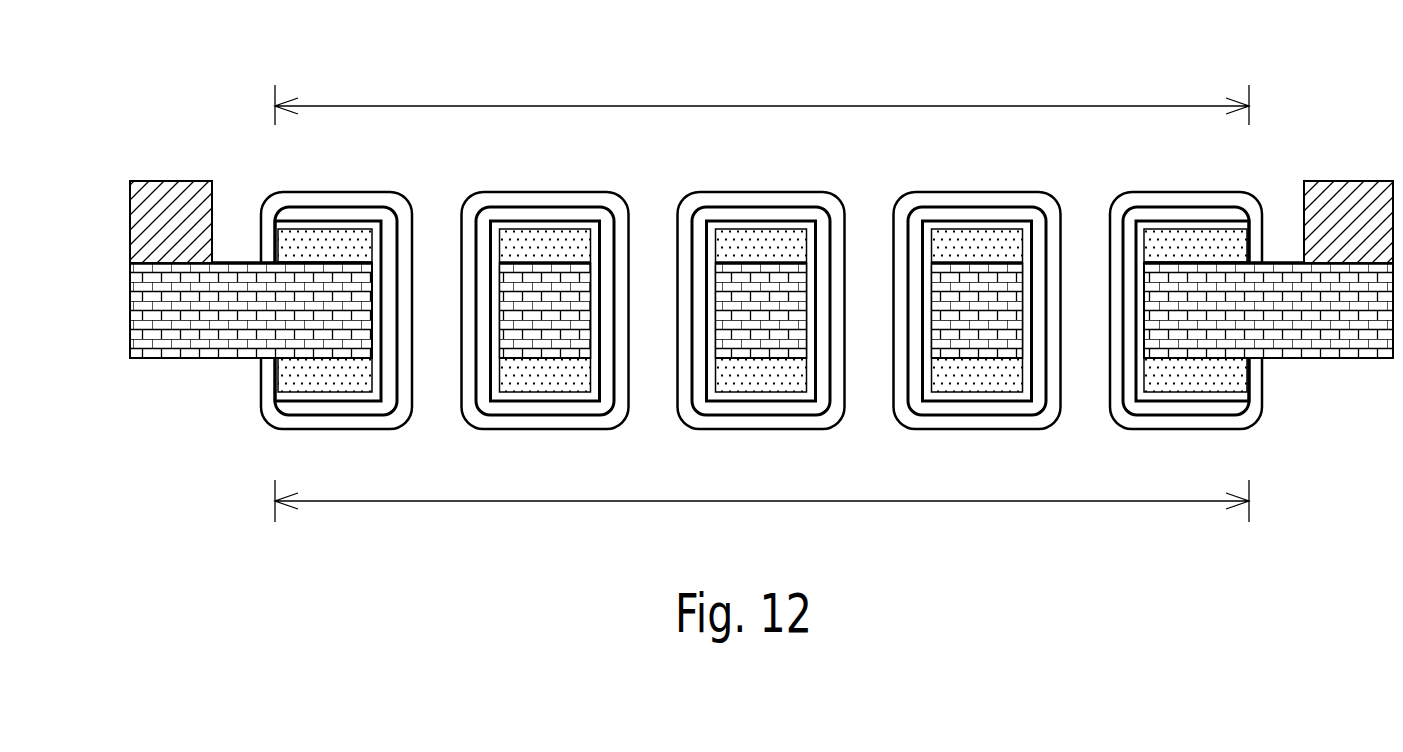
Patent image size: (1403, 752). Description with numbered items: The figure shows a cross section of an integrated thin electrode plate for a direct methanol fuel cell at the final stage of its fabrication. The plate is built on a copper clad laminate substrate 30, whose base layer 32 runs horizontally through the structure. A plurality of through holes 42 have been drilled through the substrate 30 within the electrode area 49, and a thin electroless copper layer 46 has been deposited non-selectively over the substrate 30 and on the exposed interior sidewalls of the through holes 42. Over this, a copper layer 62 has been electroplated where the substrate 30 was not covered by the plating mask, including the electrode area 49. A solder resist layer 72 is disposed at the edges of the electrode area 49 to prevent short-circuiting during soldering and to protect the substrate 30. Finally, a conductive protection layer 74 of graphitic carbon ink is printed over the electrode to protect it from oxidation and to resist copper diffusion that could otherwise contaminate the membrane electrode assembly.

The CCL substrate 30 is at (65, 212).
The base layer 32 is at (734, 322).
The through holes 42 is at (759, 203).
The electroless copper layer 46 is at (726, 345).
The electrode area 49 is at (762, 279).
The copper layer 62 is at (762, 270).
The solder resist layer 72 is at (761, 183).
The conductive protection layer 74 is at (742, 280).